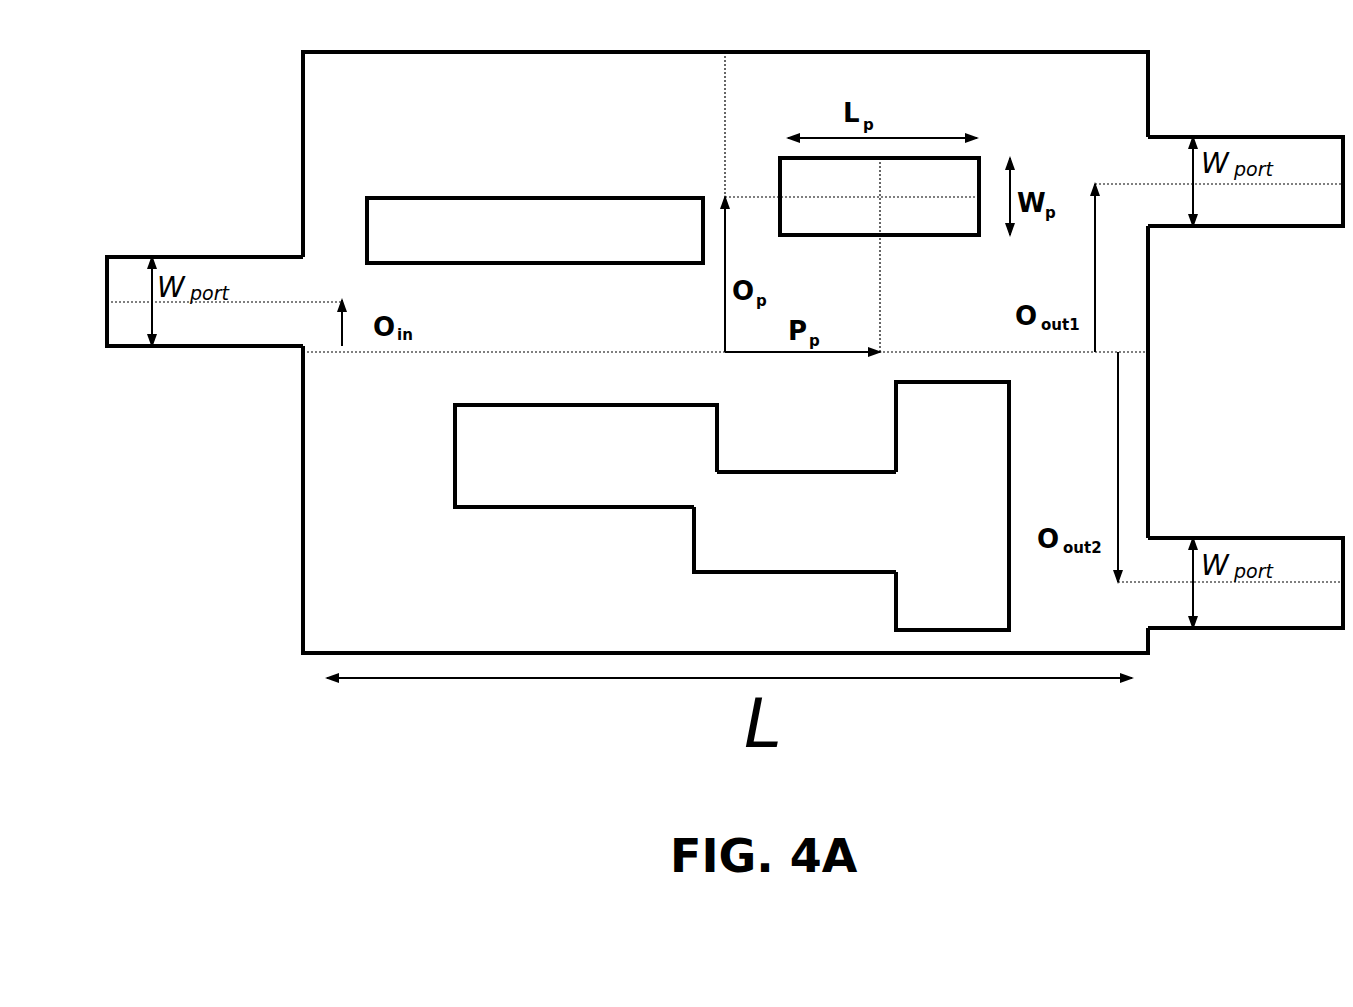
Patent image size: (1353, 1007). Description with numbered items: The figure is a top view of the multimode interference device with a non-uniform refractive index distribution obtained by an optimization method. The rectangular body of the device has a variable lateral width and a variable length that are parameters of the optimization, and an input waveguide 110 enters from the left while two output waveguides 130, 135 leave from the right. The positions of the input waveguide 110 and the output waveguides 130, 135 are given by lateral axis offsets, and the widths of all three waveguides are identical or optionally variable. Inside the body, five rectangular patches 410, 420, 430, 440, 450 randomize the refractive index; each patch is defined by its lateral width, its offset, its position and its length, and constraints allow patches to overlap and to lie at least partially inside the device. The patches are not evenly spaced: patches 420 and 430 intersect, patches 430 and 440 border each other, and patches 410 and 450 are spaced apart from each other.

The input waveguide 110 is at (178, 257).
The output waveguide 130 is at (1217, 137).
The output waveguide 135 is at (1217, 538).
The patch 410 is at (535, 230).
The patch 420 is at (586, 456).
The patch 430 is at (795, 522).
The patch 440 is at (952, 506).
The patch 450 is at (879, 196).